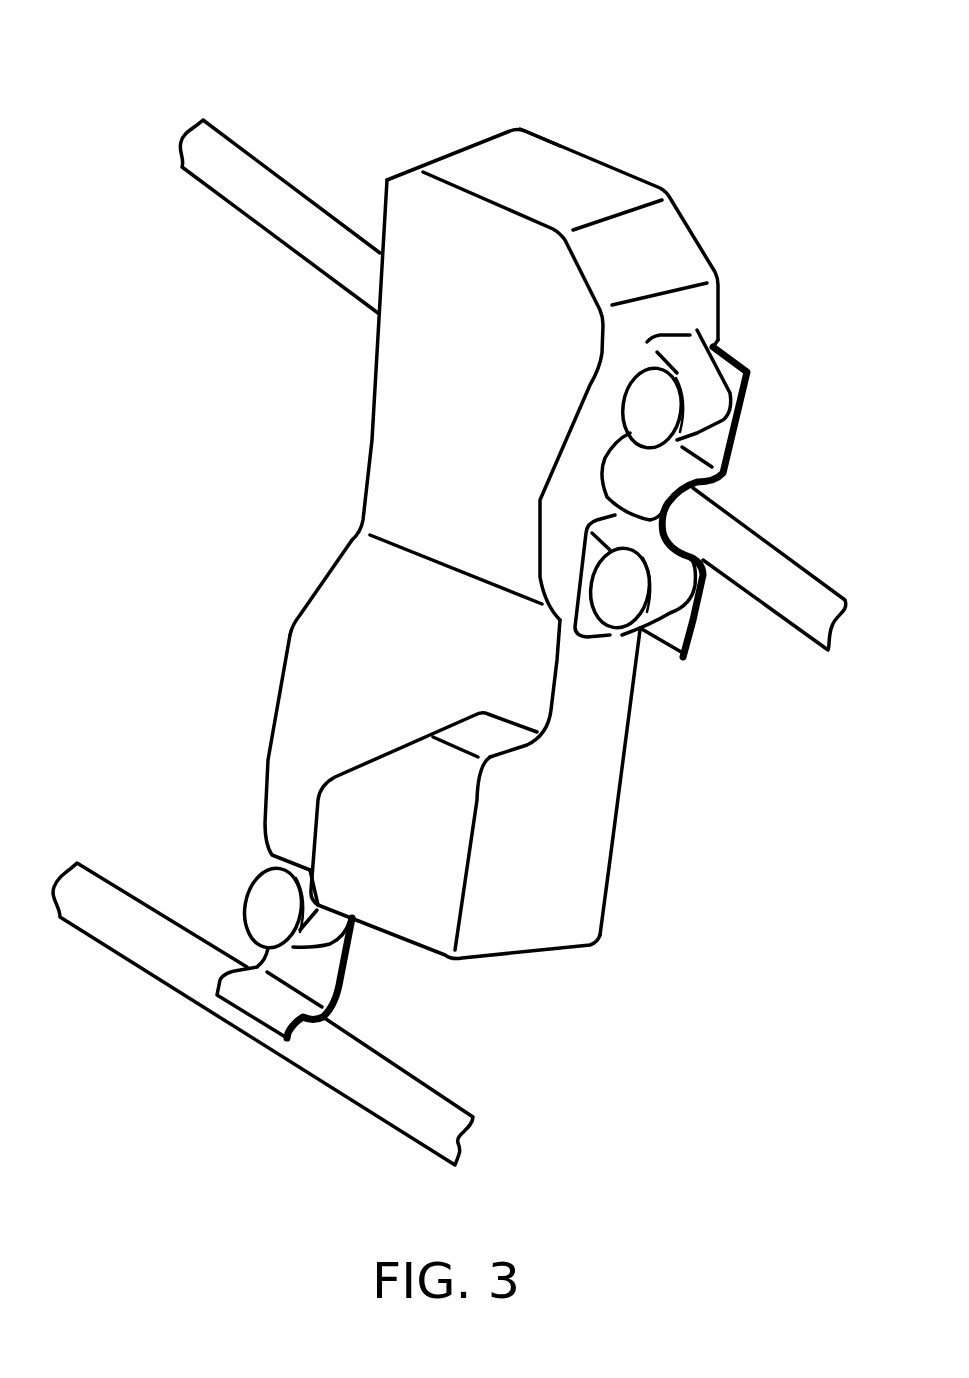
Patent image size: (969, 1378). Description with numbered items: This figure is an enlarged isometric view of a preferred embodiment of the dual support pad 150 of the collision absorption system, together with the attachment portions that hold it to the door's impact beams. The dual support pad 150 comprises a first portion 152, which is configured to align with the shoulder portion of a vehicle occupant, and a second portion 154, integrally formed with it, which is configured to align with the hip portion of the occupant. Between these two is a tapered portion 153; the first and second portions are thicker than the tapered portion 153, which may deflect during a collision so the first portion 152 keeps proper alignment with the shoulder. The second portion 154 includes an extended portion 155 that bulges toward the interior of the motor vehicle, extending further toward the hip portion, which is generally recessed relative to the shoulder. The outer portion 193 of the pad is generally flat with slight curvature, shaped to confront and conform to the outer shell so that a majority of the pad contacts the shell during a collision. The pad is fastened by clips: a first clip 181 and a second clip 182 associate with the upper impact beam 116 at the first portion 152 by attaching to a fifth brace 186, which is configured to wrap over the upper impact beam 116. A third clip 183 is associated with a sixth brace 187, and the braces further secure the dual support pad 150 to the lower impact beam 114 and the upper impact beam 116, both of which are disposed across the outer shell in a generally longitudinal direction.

The dual support pad 150 is at (646, 120).
The outer portion 193 is at (552, 133).
The first portion 152 is at (410, 213).
The tapered portion 153 is at (393, 515).
The second portion 154 is at (332, 625).
The extended portion 155 is at (387, 800).
The first clip 181 is at (638, 407).
The second clip 182 is at (605, 582).
The third clip 183 is at (260, 907).
The fifth brace 186 is at (713, 450).
The sixth brace 187 is at (257, 1005).
The upper impact beam 116 is at (808, 587).
The lower impact beam 114 is at (415, 1100).